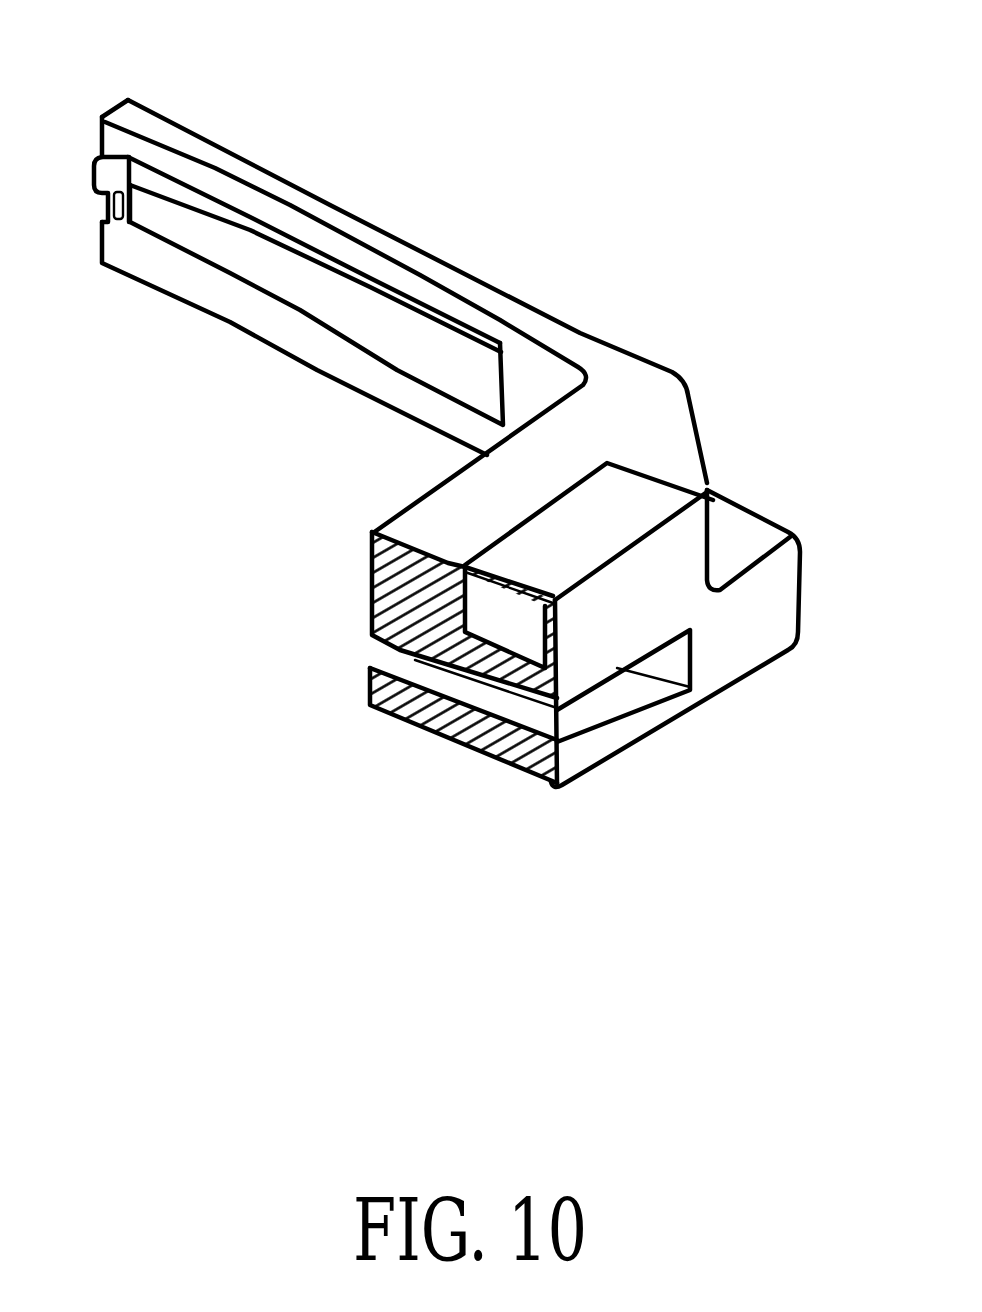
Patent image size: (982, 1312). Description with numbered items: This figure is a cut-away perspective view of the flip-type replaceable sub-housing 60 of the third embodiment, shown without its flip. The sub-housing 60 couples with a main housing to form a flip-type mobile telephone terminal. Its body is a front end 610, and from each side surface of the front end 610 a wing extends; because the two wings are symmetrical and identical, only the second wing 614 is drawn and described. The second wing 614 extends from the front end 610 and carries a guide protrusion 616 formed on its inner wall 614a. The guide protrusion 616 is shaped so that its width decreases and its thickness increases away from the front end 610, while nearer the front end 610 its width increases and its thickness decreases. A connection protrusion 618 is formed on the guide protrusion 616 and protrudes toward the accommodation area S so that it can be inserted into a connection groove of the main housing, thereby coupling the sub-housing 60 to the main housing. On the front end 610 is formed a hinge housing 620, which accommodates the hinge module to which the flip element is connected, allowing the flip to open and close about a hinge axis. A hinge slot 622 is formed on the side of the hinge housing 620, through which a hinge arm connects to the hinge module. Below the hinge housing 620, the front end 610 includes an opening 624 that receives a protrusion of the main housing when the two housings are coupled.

The sub-housing 60 is at (573, 304).
The accommodation area S is at (425, 270).
The front end 610 is at (435, 527).
The second wing 614 is at (373, 450).
The inner wall 614a is at (237, 192).
The guide protrusion 616 is at (311, 290).
The connection protrusion 618 is at (94, 170).
The hinge housing 620 is at (586, 528).
The hinge slot 622 is at (720, 530).
The opening 624 is at (640, 688).